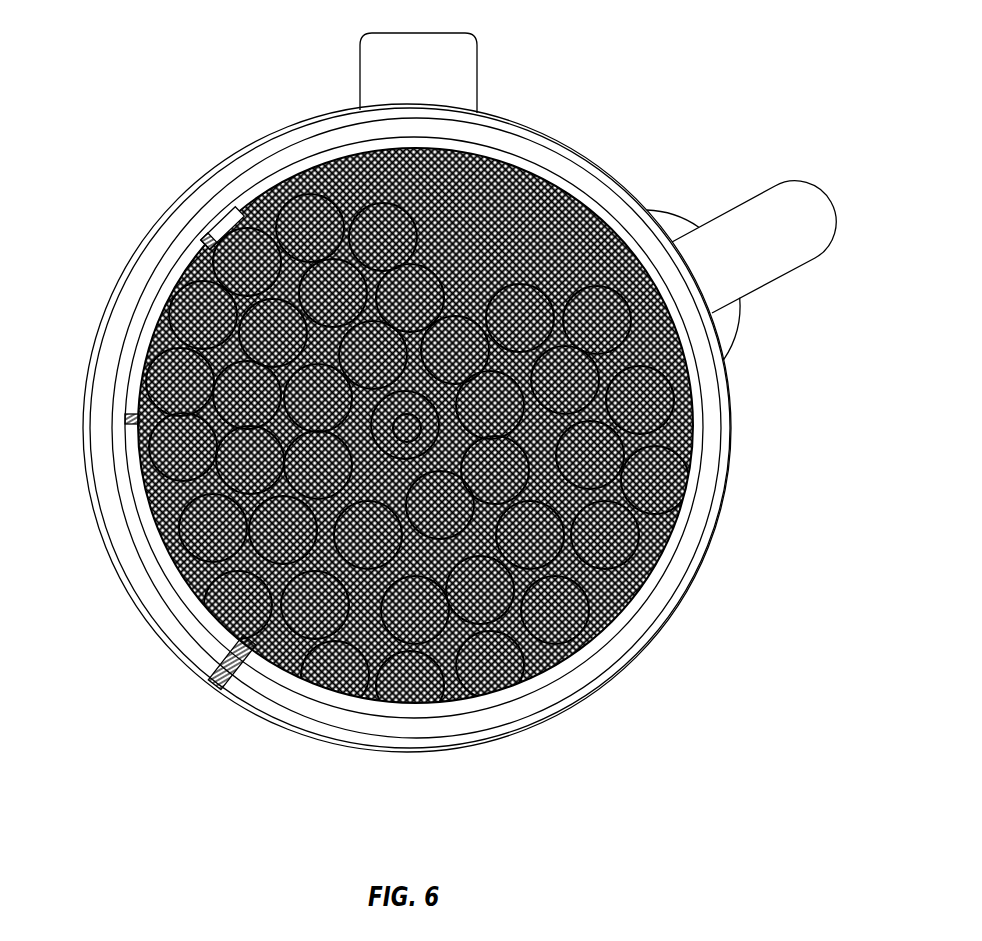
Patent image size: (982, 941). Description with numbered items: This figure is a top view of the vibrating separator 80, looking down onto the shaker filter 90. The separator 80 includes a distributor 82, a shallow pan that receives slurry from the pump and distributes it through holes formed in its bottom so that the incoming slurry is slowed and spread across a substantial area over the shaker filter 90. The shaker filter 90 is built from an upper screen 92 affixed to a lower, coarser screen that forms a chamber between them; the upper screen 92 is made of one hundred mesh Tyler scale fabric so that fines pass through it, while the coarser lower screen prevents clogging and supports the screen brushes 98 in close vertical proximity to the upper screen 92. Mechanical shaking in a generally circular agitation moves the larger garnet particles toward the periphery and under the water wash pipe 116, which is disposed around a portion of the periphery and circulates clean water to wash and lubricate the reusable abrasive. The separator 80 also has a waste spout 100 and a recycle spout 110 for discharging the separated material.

The vibrating separator 80 is at (742, 57).
The distributor 82 is at (731, 562).
The shaker filter 90 is at (587, 130).
The upper screen 92 is at (652, 170).
The screen brushes 98 is at (268, 181).
The waste spout 100 is at (438, 20).
The recycle spout 110 is at (840, 193).
The water wash pipe 116 is at (160, 300).